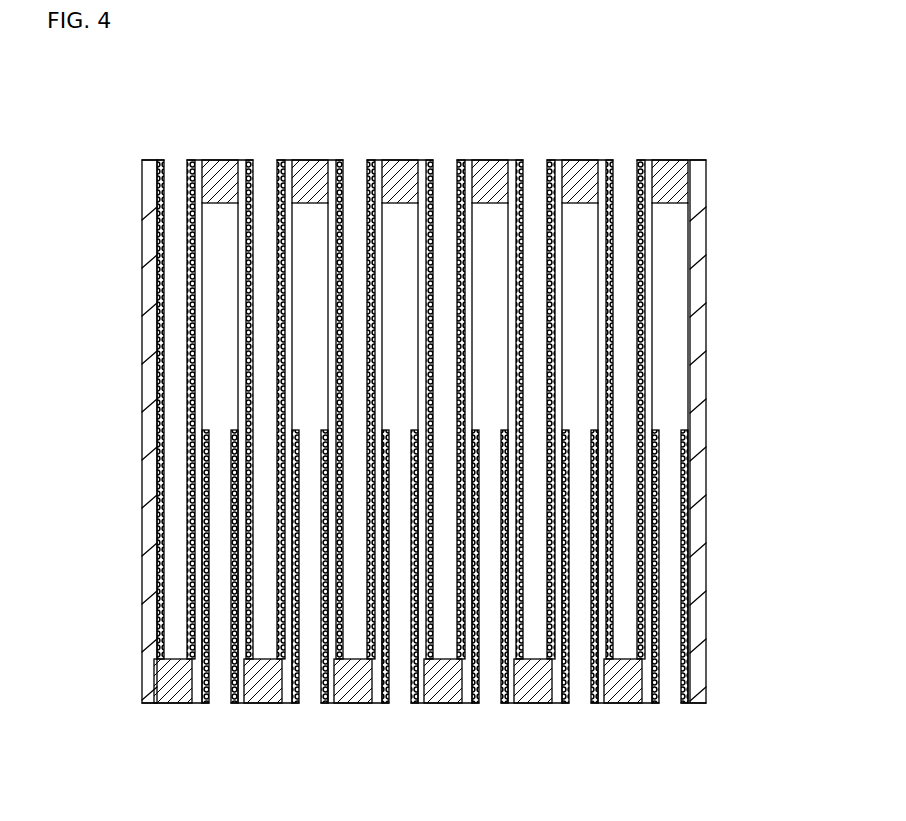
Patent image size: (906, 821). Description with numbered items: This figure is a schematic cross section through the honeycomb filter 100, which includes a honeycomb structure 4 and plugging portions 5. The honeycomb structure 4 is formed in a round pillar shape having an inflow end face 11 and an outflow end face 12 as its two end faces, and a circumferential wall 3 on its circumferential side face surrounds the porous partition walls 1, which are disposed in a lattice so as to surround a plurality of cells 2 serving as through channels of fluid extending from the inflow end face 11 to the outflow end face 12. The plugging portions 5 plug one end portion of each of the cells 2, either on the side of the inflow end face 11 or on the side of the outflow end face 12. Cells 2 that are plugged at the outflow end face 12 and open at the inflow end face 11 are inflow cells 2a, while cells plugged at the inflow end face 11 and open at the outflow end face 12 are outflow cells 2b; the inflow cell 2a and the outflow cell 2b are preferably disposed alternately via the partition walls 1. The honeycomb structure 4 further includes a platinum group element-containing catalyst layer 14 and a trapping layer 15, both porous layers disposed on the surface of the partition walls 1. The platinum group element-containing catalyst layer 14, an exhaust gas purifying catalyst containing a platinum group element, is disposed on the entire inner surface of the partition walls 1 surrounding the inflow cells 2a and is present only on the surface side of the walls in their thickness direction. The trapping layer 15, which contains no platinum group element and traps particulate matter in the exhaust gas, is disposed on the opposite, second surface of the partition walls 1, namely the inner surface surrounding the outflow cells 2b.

The honeycomb filter 100 is at (789, 65).
The partition walls 1 is at (603, 197).
The cells 2 is at (470, 433).
The inflow cells 2a is at (536, 215).
The outflow cells 2b is at (580, 640).
The circumferential wall 3 is at (152, 327).
The honeycomb structure 4 is at (714, 151).
The plugging portions 5 is at (394, 158).
The inflow end face 11 is at (186, 140).
The outflow end face 12 is at (204, 721).
The platinum group element-containing catalyst layer 14 is at (527, 286).
The trapping layer 15 is at (565, 532).